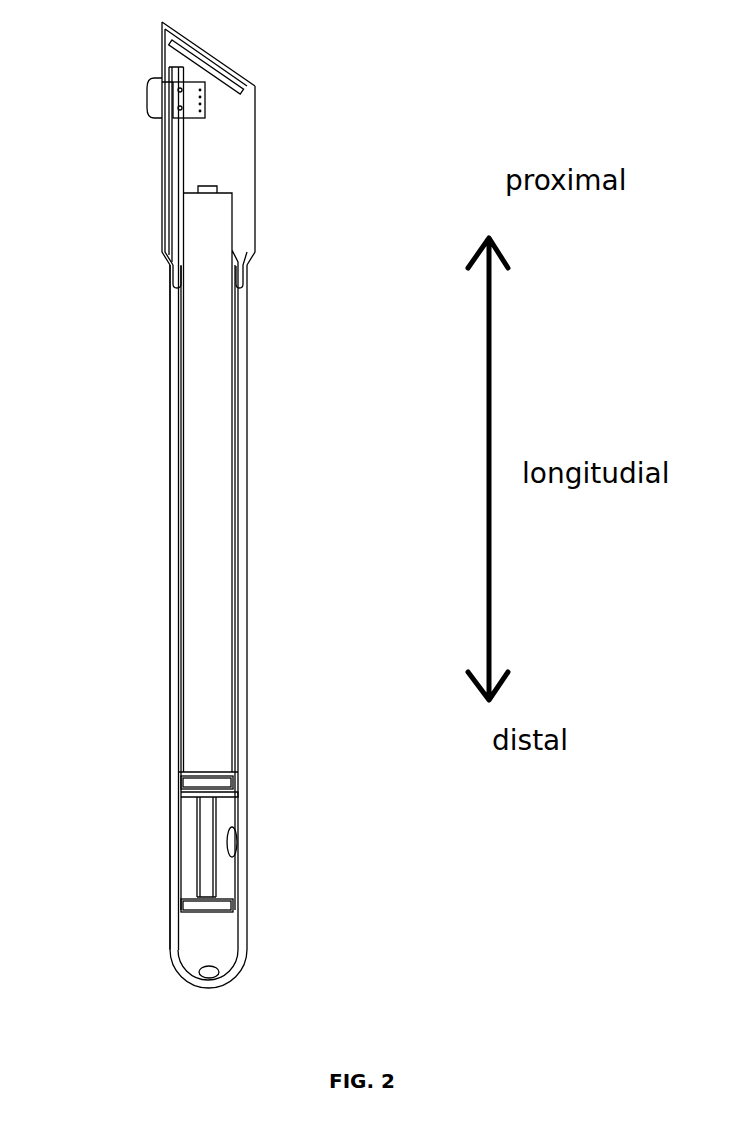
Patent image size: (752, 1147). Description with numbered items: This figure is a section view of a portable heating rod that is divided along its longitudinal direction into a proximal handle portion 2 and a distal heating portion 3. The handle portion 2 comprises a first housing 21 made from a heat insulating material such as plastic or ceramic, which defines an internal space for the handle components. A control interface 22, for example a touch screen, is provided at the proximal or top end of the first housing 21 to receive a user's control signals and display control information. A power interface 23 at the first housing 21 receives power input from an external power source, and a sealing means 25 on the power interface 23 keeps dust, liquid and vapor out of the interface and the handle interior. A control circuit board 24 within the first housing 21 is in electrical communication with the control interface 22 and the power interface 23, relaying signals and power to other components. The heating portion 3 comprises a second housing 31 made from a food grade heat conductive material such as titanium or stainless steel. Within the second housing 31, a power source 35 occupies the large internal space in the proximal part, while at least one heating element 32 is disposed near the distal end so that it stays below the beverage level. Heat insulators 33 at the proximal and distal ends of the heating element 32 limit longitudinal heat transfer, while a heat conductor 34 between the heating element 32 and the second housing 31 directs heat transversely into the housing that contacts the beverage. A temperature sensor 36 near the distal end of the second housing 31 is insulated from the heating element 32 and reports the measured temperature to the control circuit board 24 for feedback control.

The handle portion 2 is at (288, 133).
The first housing 21 is at (255, 225).
The control interface 22 is at (212, 53).
The power interface 23 is at (188, 97).
The control circuit board 24 is at (176, 152).
The sealing means 25 is at (148, 76).
The heating portion 3 is at (283, 520).
The second housing 31 is at (175, 467).
The heating element 32 is at (208, 813).
The heat insulator 33 is at (180, 898).
The heat conductor 34 is at (228, 813).
The power source 35 is at (205, 367).
The temperature sensor 36 is at (315, 918).